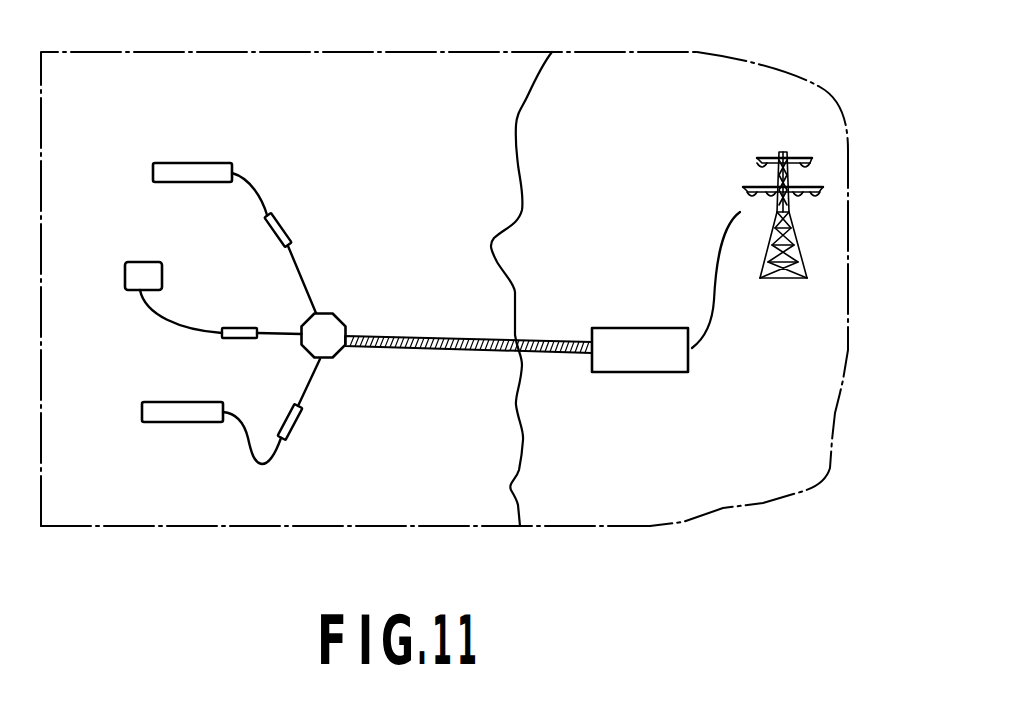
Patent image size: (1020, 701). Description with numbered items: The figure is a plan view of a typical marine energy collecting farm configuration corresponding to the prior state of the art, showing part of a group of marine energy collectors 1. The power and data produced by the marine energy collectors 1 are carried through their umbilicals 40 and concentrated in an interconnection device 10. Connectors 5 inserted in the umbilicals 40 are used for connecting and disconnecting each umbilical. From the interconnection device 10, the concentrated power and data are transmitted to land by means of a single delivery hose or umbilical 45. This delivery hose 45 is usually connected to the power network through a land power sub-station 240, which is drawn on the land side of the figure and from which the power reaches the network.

The marine energy collectors 1 is at (178, 172).
The connectors 5 is at (281, 228).
The interconnection device 10 is at (322, 343).
The umbilicals 40 is at (280, 332).
The delivery hose 45 is at (437, 337).
The land power sub-station 240 is at (650, 350).